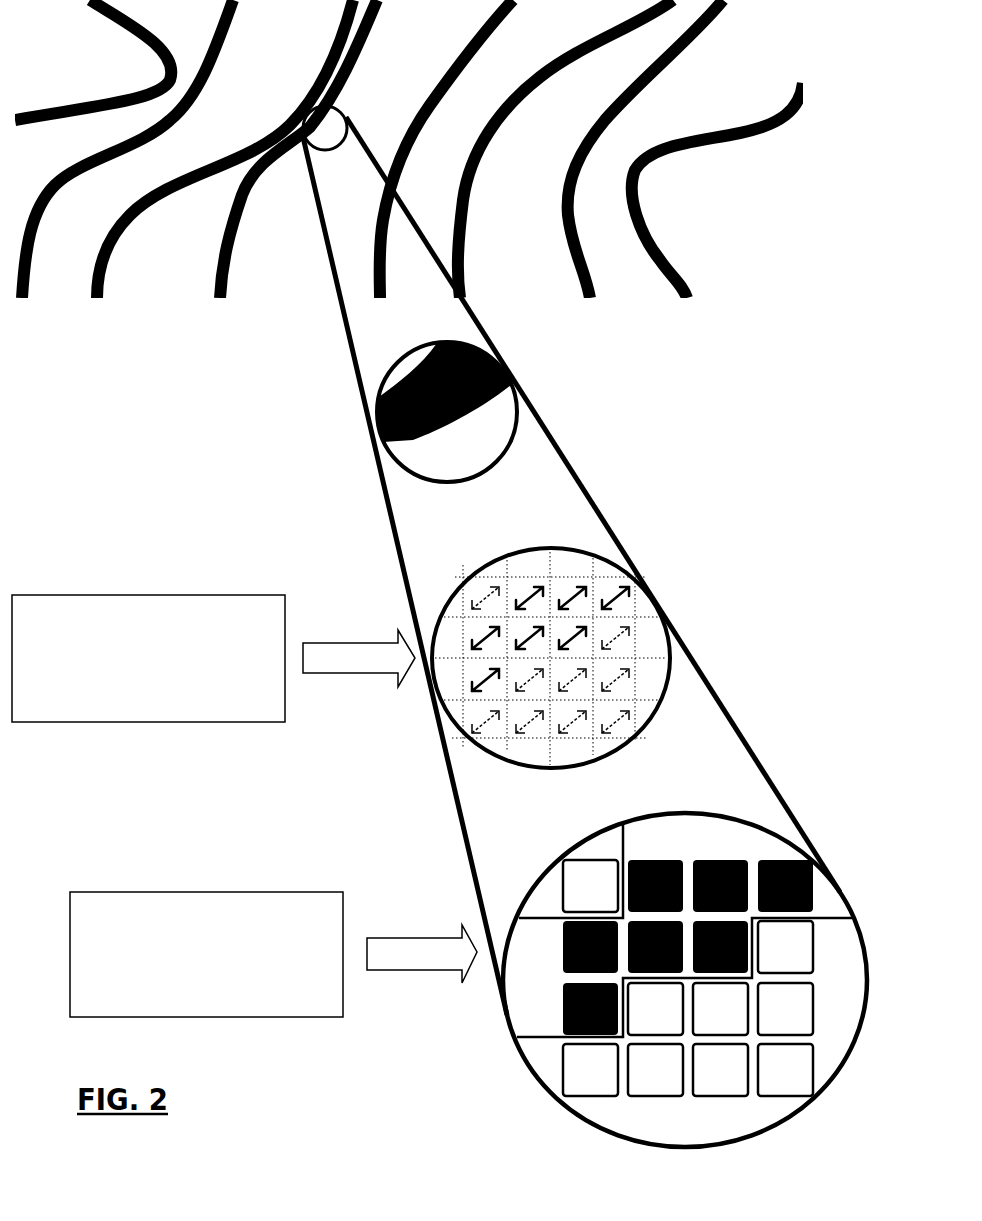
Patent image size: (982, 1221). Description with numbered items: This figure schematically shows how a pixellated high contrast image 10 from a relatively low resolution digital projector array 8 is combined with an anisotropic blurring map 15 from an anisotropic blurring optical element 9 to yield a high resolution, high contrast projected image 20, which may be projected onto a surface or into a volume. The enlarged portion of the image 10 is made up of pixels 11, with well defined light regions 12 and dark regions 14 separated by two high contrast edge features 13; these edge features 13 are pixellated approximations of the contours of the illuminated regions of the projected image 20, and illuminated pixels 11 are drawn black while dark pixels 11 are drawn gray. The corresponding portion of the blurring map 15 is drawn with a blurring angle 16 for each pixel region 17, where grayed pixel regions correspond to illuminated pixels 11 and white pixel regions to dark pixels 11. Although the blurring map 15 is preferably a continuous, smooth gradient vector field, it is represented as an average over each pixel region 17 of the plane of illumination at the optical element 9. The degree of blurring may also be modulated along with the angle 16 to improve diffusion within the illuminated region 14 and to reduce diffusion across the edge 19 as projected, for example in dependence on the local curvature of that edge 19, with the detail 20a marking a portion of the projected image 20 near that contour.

The digital projector array 8 is at (112, 1006).
The anisotropic blurring optical element 9 is at (57, 708).
The pixellated high contrast image 10 is at (538, 992).
The pixels 11 is at (722, 859).
The light region 12 is at (553, 884).
The high contrast edge features 13 is at (620, 845).
The dark region 14 is at (706, 851).
The anisotropic blurring map 15 is at (526, 647).
The blurring angle 16 is at (548, 592).
The pixel region 17 is at (631, 688).
The edge as projected 19 is at (454, 432).
The high resolution, high contrast projected image 20 is at (170, 268).
The surface feature 20a is at (391, 379).